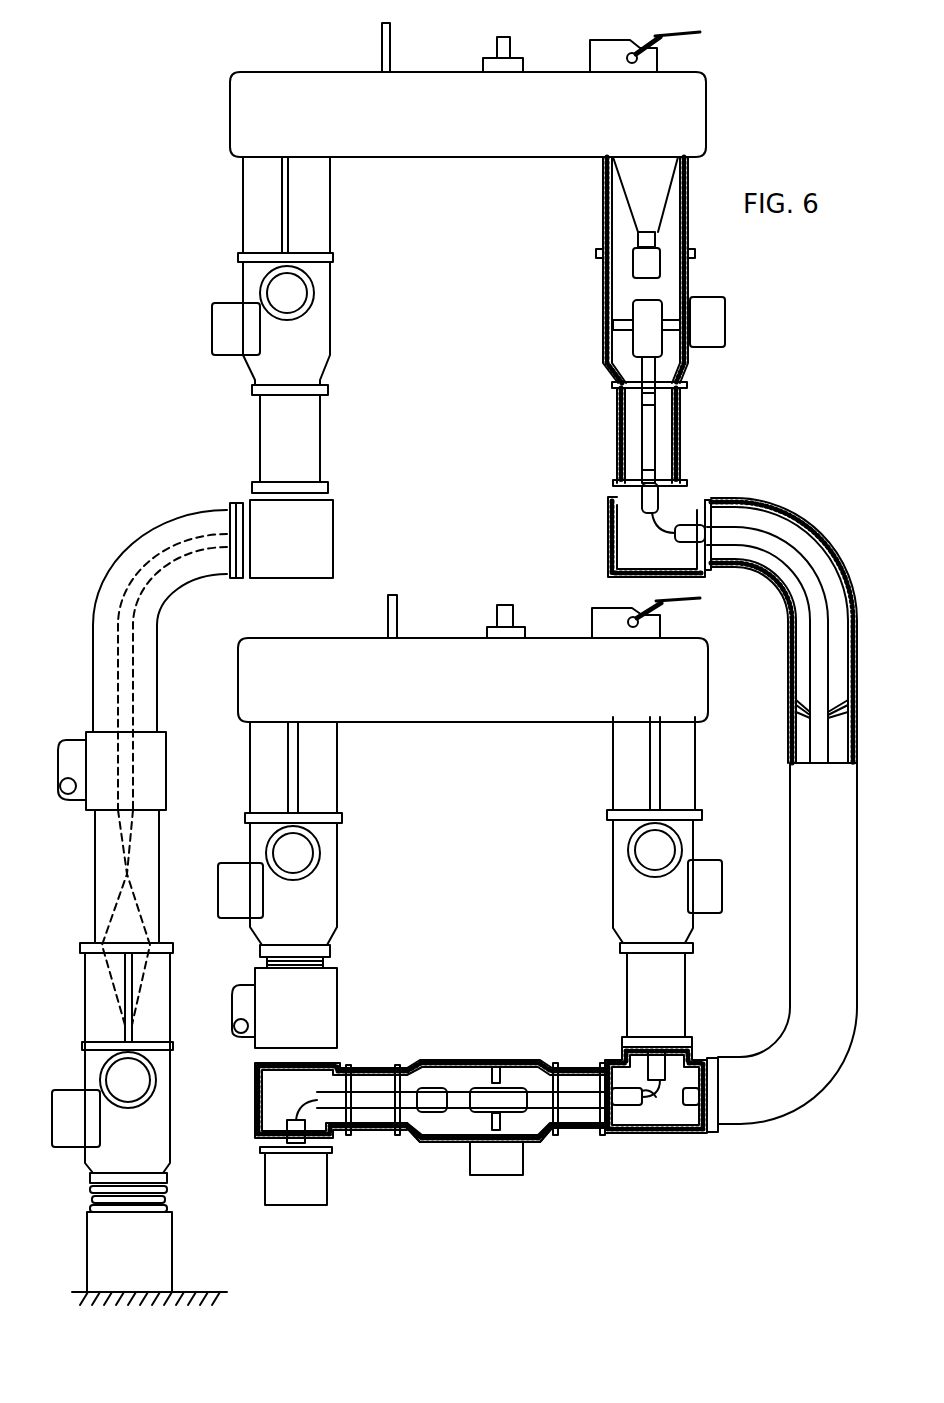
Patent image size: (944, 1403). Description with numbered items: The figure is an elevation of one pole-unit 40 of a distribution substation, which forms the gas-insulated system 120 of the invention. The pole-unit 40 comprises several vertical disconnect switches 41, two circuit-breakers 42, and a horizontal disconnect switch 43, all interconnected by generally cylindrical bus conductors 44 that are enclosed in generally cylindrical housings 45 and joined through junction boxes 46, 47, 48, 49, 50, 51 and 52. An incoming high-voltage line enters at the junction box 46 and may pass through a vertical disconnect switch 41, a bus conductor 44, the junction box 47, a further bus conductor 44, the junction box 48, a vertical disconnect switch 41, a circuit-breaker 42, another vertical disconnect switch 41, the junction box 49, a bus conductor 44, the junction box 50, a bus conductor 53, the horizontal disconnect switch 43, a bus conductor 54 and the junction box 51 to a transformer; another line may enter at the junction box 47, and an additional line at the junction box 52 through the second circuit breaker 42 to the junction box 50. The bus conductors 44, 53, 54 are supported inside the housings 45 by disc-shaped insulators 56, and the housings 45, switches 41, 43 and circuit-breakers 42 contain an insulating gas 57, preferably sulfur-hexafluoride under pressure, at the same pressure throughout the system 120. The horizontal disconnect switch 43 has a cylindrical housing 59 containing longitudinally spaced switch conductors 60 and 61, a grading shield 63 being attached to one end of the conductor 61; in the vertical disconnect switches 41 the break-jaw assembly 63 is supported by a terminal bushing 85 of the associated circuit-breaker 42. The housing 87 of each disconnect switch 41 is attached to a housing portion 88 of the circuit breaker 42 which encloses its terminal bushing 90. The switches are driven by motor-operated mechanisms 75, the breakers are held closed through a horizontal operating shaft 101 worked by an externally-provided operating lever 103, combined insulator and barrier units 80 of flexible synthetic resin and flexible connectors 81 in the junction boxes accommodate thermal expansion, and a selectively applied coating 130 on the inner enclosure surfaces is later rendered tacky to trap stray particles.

The pole-unit 40 is at (758, 361).
The vertical disconnect switch 41 is at (348, 356).
The circuit-breaker 42 is at (428, 186).
The horizontal disconnect switch 43 is at (443, 1048).
The bus conductor 44 is at (112, 585).
The cylindrical housing 45 is at (157, 660).
The junction box 46 is at (172, 1220).
The junction box 47 is at (166, 772).
The junction box 48 is at (333, 545).
The junction box 49 is at (608, 521).
The junction box 50 is at (690, 1135).
The junction box 51 is at (255, 1090).
The junction box 52 is at (337, 985).
The bus conductor 53 is at (560, 1060).
The bus conductor 54 is at (380, 1073).
The disc-shaped insulator 56 is at (858, 705).
The insulating gas 57 is at (612, 236).
The cylindrical housing 59 is at (495, 1062).
The switch conductor 60 is at (538, 1140).
The switch conductor 61 is at (405, 1138).
The grading shield 63 is at (645, 278).
The motor-operated mechanism 75 is at (212, 330).
The combined insulator and barrier unit 80 is at (615, 420).
The flexible connector 81 is at (648, 1100).
The terminal bushing 85 is at (683, 185).
The housing 87 is at (243, 290).
The housing portion 88 is at (333, 209).
The terminal bushing 90 is at (312, 72).
The operating shaft 101 is at (637, 62).
The operating lever 103 is at (640, 45).
The system 120 is at (680, 365).
The coating 130 is at (790, 515).